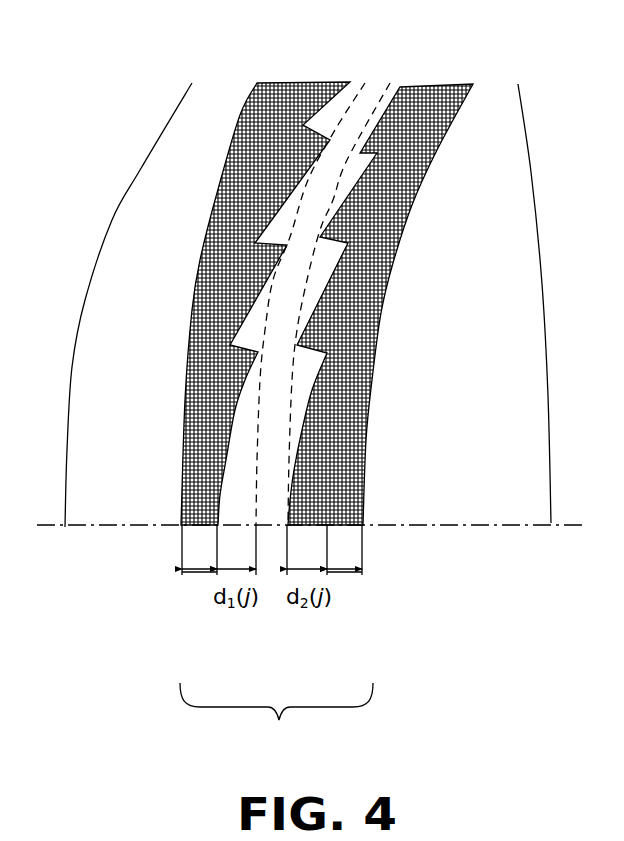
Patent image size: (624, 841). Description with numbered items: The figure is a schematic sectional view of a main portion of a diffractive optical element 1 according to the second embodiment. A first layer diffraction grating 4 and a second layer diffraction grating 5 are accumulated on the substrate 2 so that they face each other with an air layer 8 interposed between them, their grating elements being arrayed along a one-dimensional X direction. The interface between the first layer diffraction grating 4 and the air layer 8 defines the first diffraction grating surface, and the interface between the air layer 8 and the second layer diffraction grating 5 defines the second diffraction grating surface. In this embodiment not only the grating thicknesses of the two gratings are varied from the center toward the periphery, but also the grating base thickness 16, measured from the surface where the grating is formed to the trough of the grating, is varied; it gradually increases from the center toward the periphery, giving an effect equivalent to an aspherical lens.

The tread pattern (rib block unit) 1 is at (276, 719).
The substrate 2 is at (133, 363).
The first layer diffraction grating 4 is at (300, 92).
The second layer diffraction grating 5 is at (440, 87).
The air layer 8 is at (368, 97).
The grating base thickness 16 is at (200, 573).